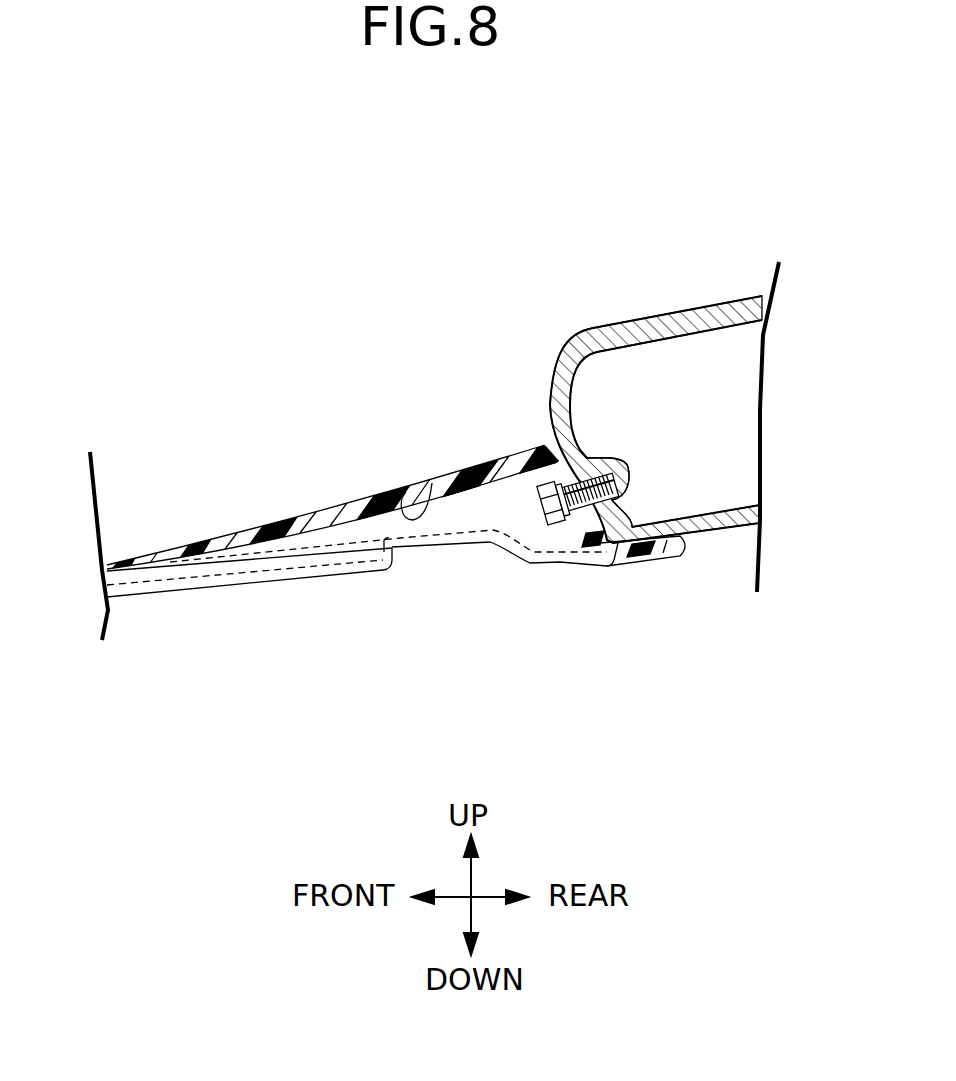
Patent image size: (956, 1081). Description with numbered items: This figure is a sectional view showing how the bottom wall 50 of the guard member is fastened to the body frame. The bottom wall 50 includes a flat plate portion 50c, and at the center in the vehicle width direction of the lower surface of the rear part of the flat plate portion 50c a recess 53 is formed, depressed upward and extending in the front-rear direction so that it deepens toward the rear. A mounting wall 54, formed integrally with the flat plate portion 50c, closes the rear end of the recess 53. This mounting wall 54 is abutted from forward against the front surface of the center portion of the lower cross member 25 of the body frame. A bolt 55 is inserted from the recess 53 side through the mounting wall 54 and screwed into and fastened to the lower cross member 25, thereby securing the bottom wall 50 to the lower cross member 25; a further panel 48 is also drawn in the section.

The lower cross member 25 is at (662, 322).
The floor panel 48 is at (231, 594).
The bottom wall 50 is at (318, 588).
The flat plate portion 50c is at (312, 513).
The recess 53 is at (432, 483).
The mounting wall 54 is at (567, 457).
The bolt 55 is at (538, 525).